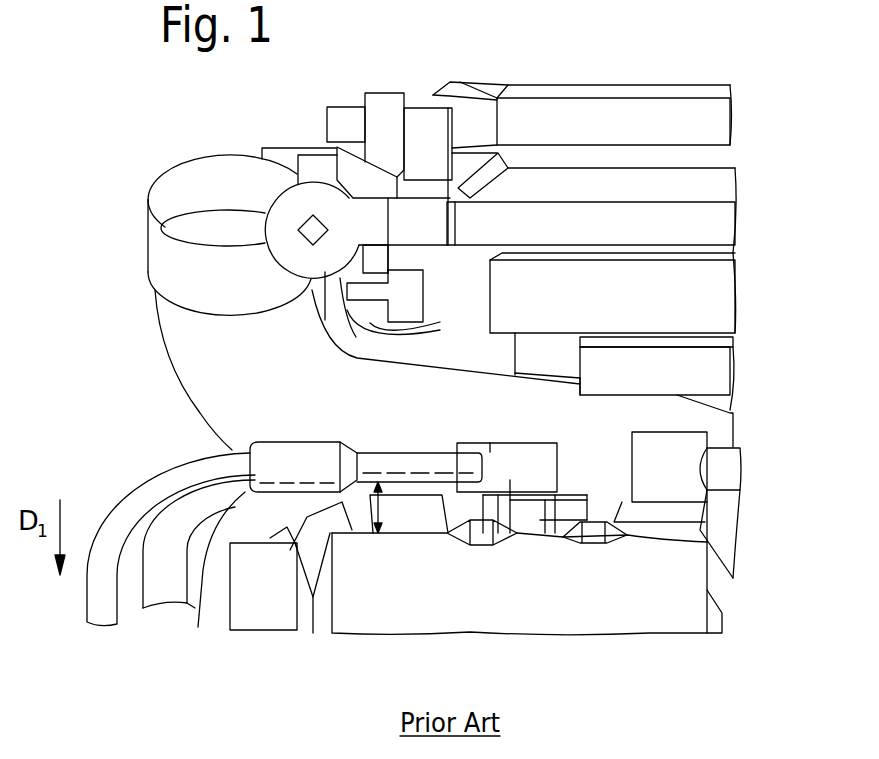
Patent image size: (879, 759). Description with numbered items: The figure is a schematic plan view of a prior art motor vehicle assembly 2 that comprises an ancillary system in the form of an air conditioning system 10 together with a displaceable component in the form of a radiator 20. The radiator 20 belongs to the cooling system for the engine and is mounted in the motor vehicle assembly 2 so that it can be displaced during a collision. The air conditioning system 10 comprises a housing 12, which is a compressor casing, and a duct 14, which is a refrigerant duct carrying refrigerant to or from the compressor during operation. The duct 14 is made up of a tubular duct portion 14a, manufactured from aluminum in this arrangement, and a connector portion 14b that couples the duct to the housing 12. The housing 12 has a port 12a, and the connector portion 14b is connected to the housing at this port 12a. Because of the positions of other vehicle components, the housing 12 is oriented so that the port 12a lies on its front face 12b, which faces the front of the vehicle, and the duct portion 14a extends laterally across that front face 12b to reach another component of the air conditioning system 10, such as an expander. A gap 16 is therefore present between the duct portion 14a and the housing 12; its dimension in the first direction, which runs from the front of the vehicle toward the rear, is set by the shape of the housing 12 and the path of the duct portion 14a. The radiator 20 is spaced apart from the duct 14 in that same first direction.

The motor vehicle assembly 2 is at (668, 58).
The air conditioning system 10 is at (762, 446).
The housing 12 is at (667, 558).
The port 12a is at (552, 513).
The front face 12b is at (617, 528).
The duct 14 is at (270, 445).
The duct portion 14a is at (392, 455).
The connector portion 14b is at (511, 470).
The gap 16 is at (378, 508).
The radiator 20 is at (680, 215).